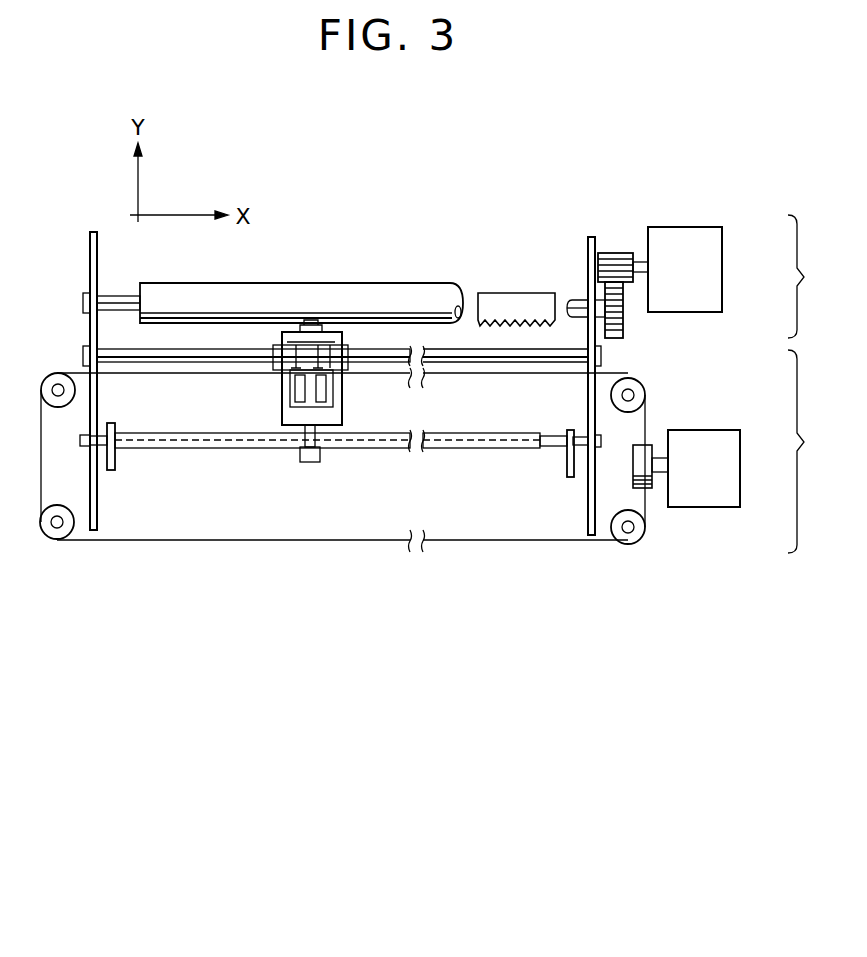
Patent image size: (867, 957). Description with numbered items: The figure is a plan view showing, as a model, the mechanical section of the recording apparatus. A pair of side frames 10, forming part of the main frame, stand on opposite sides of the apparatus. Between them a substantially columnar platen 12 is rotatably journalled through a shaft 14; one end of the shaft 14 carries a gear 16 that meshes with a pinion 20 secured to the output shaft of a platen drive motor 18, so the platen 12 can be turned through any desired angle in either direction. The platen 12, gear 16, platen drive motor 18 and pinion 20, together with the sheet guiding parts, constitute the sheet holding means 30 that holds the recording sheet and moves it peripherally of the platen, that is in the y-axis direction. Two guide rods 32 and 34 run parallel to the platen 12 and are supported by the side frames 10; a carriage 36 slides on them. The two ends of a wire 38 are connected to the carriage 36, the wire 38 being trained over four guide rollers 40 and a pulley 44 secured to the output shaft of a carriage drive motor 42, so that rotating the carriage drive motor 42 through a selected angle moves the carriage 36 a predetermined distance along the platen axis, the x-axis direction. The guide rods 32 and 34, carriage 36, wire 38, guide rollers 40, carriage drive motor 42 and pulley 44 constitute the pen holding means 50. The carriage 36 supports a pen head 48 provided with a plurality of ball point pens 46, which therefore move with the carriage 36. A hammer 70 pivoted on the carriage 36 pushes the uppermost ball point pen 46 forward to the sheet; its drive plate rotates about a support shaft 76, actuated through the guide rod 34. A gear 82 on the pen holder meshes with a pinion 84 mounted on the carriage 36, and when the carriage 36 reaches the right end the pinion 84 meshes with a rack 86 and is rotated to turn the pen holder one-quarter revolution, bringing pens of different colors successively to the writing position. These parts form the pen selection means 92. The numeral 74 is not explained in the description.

The side frames 10 is at (90, 243).
The platen 12 is at (224, 290).
The shaft 14 is at (118, 300).
The gear 16 is at (625, 318).
The platen drive motor 18 is at (712, 262).
The pinion 20 is at (618, 262).
The sheet holding means 30 is at (812, 276).
The guide rod 32 is at (115, 350).
The guide rod 34 is at (100, 433).
The carriage 36 is at (290, 400).
The wire 38 is at (192, 378).
The guide rollers 40 is at (57, 372).
The carriage drive motor 42 is at (725, 480).
The pulley 44 is at (633, 460).
The ball point pens 46 is at (320, 407).
The pen head 48 is at (342, 390).
The pen holding means 50 is at (812, 451).
The hammer 70 is at (318, 458).
The lead screw section 74 is at (490, 437).
The support shaft 76 is at (120, 450).
The gear 82 is at (350, 356).
The pinion 84 is at (318, 320).
The rack 86 is at (515, 310).
The pen selection means 92 is at (303, 308).